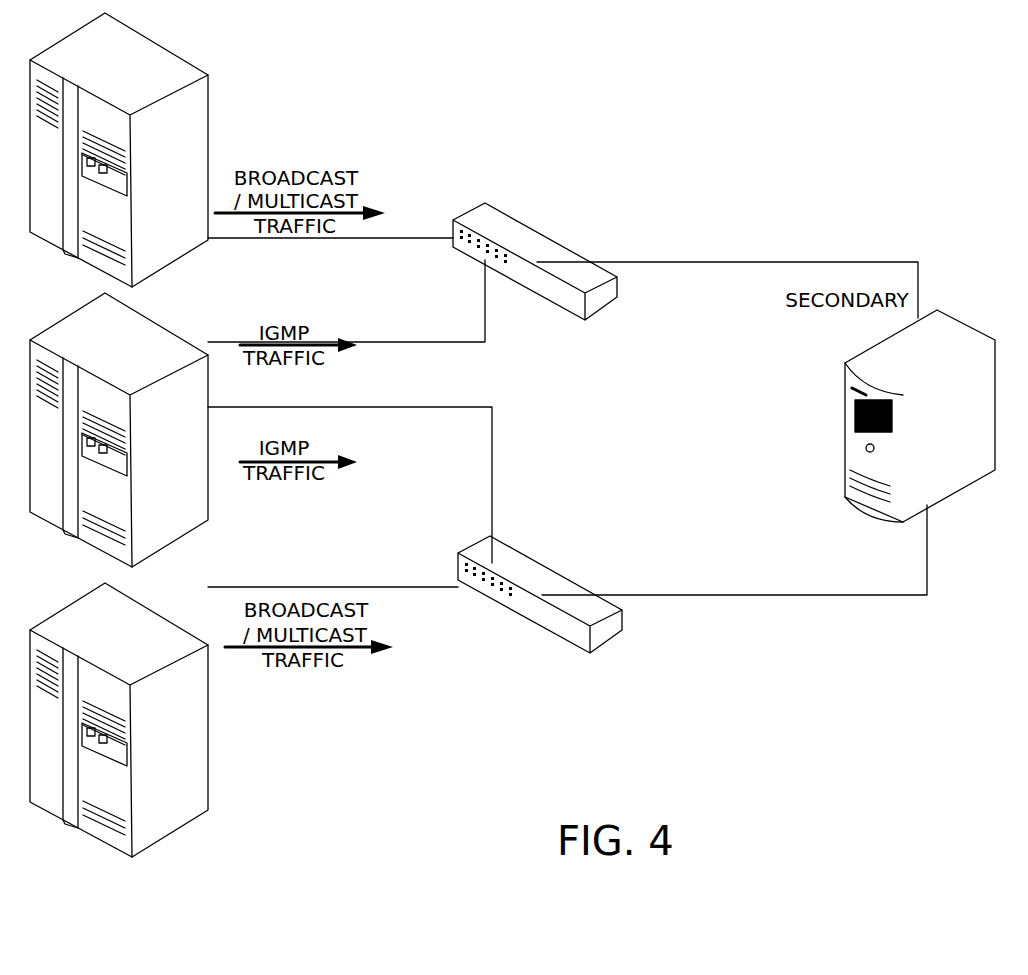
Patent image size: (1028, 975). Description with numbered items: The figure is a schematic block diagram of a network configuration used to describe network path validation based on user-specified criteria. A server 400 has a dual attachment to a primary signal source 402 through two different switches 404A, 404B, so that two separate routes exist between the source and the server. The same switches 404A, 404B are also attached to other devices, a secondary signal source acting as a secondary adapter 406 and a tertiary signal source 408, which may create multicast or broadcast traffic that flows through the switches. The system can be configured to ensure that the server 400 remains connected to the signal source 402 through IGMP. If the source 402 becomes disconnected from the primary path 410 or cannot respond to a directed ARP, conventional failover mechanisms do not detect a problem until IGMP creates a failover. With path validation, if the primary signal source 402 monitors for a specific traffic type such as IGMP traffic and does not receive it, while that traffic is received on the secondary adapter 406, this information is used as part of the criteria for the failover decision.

The server 400 is at (938, 492).
The primary signal source 402 is at (183, 518).
The switch 404A is at (613, 308).
The switch 404B is at (625, 630).
The secondary adapter 406 is at (203, 103).
The device 408 is at (168, 825).
The primary path 410 is at (734, 563).